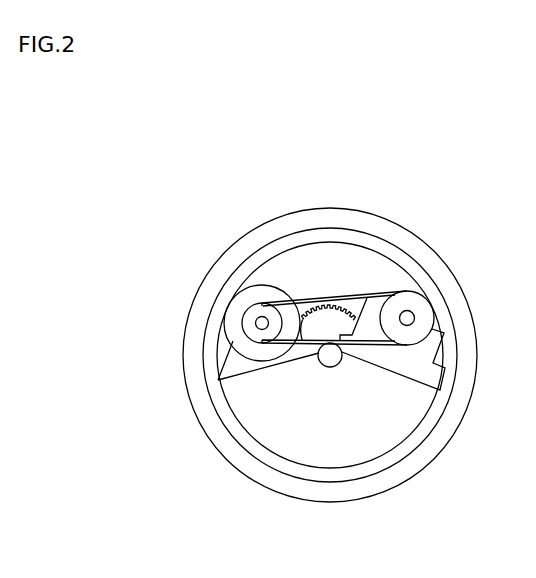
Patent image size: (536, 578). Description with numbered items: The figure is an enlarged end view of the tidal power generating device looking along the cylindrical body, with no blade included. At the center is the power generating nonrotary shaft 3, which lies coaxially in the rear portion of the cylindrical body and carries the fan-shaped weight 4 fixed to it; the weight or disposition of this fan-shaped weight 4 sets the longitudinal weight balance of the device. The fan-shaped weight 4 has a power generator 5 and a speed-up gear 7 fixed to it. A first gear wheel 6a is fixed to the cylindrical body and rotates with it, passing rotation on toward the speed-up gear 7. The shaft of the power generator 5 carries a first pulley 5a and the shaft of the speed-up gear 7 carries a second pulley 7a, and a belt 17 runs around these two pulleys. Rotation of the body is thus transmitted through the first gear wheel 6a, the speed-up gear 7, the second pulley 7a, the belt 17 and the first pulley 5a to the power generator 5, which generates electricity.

The power generating nonrotary shaft 3 is at (331, 367).
The fan-shaped weight 4 is at (408, 402).
The power generator 5 is at (232, 296).
The first pulley 5a is at (259, 290).
The first gear wheel 6a is at (325, 322).
The speed-up gear 7 is at (434, 316).
The second pulley 7a is at (405, 293).
The belt 17 is at (352, 293).